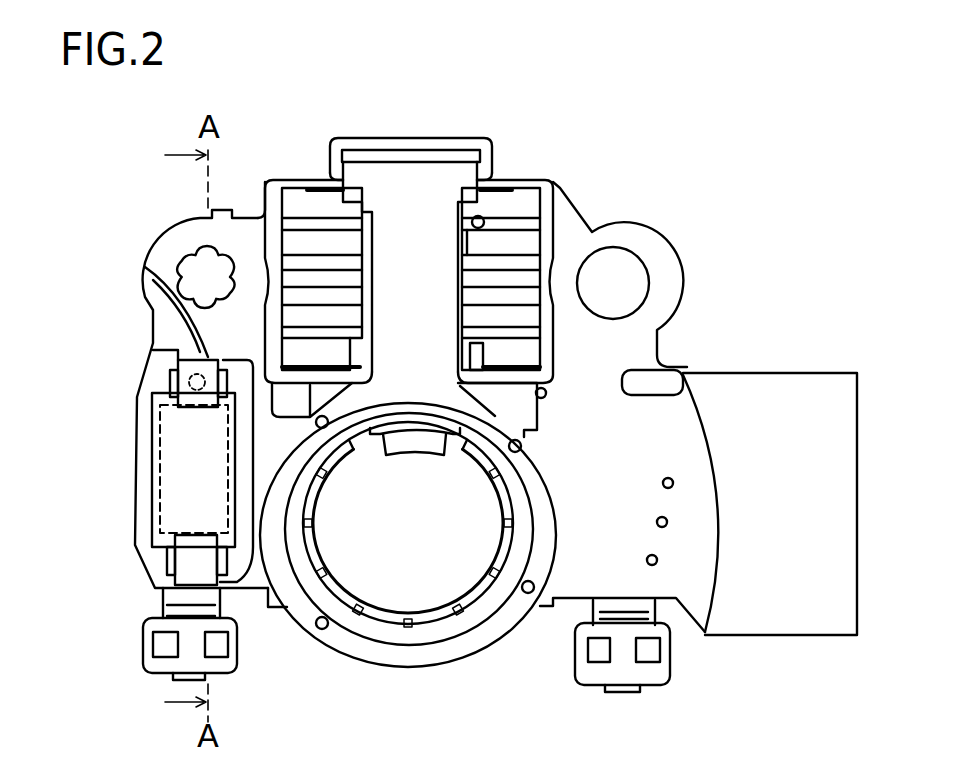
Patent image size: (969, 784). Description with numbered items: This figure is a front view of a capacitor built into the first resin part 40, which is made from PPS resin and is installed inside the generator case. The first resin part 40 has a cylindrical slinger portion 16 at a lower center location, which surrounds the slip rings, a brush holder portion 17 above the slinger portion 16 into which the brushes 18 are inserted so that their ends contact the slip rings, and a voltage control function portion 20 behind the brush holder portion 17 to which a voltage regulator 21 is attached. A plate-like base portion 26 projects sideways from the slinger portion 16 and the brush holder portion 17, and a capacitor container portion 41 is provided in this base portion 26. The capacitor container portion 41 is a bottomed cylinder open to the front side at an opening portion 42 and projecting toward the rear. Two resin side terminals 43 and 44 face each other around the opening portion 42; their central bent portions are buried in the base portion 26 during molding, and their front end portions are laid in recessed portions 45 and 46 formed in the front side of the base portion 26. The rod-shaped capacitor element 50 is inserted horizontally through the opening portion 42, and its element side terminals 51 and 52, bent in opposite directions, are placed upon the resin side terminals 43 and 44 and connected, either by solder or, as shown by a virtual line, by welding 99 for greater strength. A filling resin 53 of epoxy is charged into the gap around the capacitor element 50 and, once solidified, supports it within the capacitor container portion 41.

The slinger portion 16 is at (387, 626).
The brush holder portion 17 is at (430, 186).
The brushes 18 is at (385, 452).
The voltage control function portion 20 is at (560, 202).
The voltage regulator 21 is at (303, 202).
The base portion 26 is at (260, 600).
The first resin part 40 is at (172, 226).
The capacitor container portion 41 is at (170, 350).
The opening portion 42 is at (152, 460).
The resin side terminal 43 is at (150, 648).
The resin side terminal 44 is at (170, 387).
The recessed portion 45 is at (175, 555).
The recessed portion 46 is at (170, 372).
The capacitor element 50 is at (160, 498).
The element side terminal 51 is at (183, 567).
The element side terminal 52 is at (145, 267).
The filling resin 53 is at (175, 440).
The welding 99 is at (197, 374).